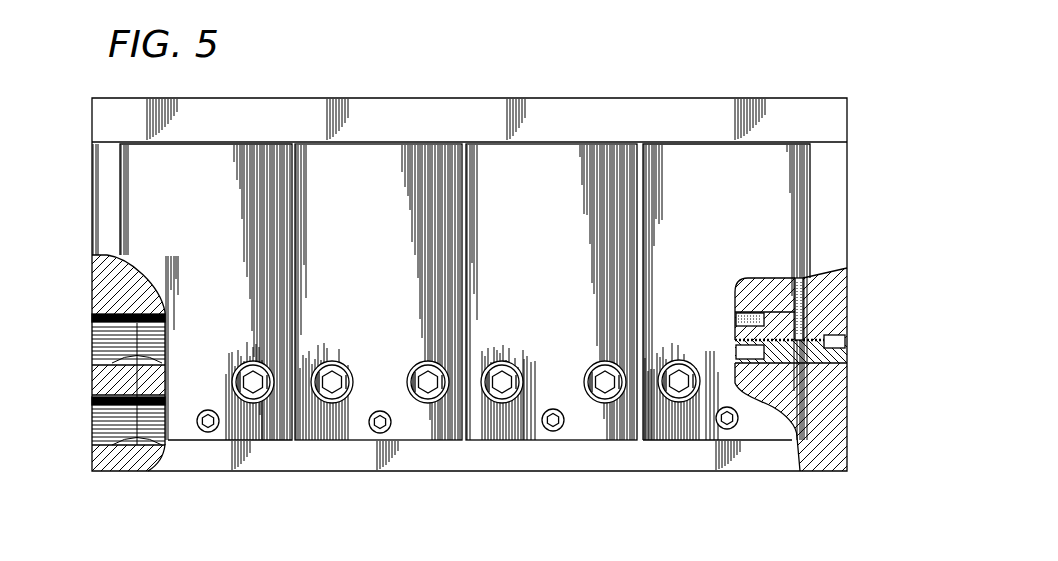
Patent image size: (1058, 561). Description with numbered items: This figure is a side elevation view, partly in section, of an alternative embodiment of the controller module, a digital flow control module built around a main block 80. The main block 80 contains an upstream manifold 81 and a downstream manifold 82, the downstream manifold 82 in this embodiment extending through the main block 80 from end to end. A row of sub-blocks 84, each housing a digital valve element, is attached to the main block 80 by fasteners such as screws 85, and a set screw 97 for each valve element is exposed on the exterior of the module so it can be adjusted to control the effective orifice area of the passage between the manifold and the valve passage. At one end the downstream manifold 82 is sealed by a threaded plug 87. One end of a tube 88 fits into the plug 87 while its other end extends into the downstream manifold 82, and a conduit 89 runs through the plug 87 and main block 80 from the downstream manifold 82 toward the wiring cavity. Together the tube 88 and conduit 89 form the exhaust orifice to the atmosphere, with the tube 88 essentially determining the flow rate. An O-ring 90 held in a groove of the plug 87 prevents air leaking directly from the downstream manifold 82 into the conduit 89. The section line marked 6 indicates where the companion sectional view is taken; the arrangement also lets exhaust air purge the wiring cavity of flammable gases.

The main block 80 is at (92, 237).
The upstream manifold 81 is at (97, 439).
The downstream manifold 82 is at (97, 361).
The sub-block 84 is at (332, 168).
The screw 85 is at (600, 404).
The threaded plug 87 is at (843, 356).
The tube 88 is at (735, 320).
The conduit 89 is at (840, 274).
The O-ring 90 is at (778, 318).
The set screw 97 is at (729, 430).
The section line 6- 6 is at (706, 488).